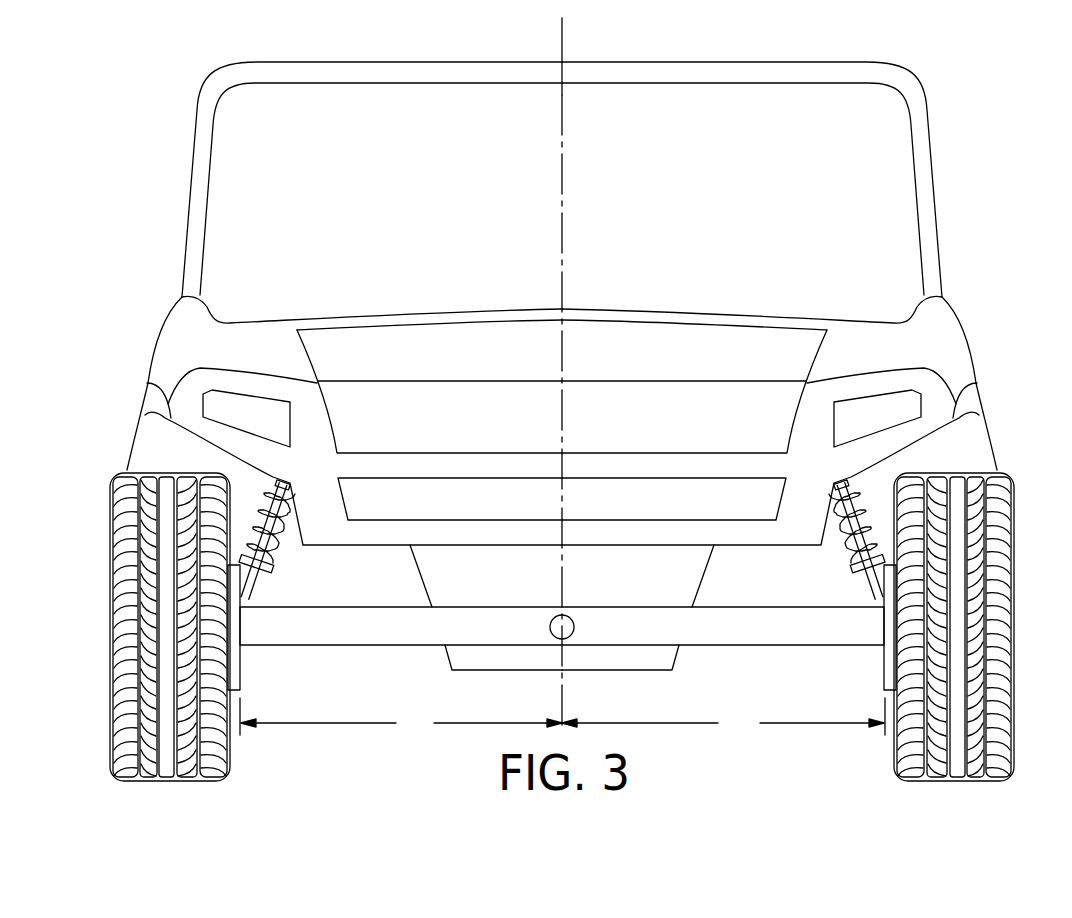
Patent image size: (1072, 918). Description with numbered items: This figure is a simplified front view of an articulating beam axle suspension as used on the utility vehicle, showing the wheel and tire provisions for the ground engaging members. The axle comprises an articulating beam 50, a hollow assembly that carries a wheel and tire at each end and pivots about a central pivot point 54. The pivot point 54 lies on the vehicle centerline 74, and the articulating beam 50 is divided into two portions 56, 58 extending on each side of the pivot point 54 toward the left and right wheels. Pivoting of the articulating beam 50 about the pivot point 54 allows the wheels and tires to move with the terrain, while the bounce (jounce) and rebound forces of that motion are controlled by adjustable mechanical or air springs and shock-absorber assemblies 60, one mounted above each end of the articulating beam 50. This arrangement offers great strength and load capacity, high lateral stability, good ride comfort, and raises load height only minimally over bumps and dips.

The articulating beam 50 is at (347, 648).
The pivot point 54 is at (574, 626).
The portion of the articulating beam 56 is at (401, 718).
The portion of the articulating beam 58 is at (723, 718).
The shock-absorber assembly 60 is at (290, 552).
The vehicle centerline 74 is at (563, 35).